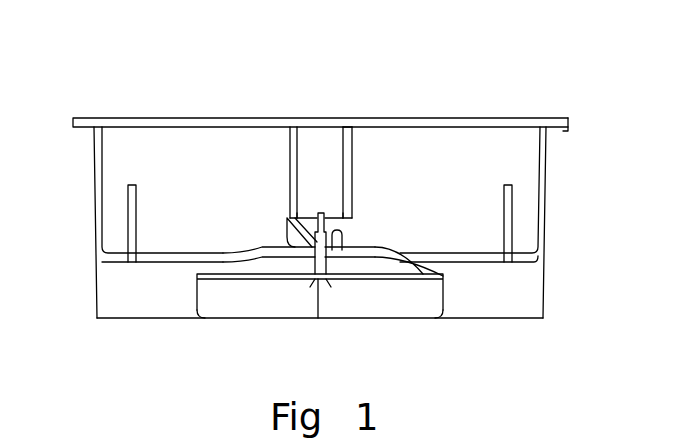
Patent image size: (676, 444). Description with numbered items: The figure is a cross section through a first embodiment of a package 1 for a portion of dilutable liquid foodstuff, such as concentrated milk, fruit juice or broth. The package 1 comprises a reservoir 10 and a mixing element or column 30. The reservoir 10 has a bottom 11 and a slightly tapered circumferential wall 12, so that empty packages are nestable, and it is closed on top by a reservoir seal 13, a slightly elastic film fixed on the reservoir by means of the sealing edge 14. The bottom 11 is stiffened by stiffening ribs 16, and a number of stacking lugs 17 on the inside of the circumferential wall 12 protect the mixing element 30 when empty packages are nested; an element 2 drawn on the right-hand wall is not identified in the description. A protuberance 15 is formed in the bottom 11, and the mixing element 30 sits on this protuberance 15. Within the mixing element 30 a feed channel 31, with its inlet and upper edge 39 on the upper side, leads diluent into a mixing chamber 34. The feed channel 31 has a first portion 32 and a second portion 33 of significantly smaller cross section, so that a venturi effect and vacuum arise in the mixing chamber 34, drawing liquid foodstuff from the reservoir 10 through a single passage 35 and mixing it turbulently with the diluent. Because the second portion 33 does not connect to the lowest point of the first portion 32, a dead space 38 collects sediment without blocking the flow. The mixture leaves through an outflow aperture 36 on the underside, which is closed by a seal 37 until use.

The package 1 is at (538, 80).
The side wall 2 is at (543, 220).
The reservoir 10 is at (474, 170).
The bottom 11 is at (182, 262).
The circumferential wall 12 is at (93, 180).
The reservoir seal 13 is at (140, 118).
The sealing edge 14 is at (567, 128).
The protuberance 15 is at (385, 252).
The stiffening ribs 16 is at (172, 305).
The stacking lugs 17 is at (127, 220).
The mixing element 30 is at (352, 180).
The feed channel 31 is at (323, 132).
The first portion 32 is at (303, 155).
The second portion 33 is at (350, 227).
The mixing chamber 34 is at (313, 284).
The passage 35 is at (292, 224).
The outflow aperture 36 is at (327, 278).
The seal 37 is at (274, 280).
The dead space 38 is at (300, 217).
The upper edge 39 is at (350, 118).